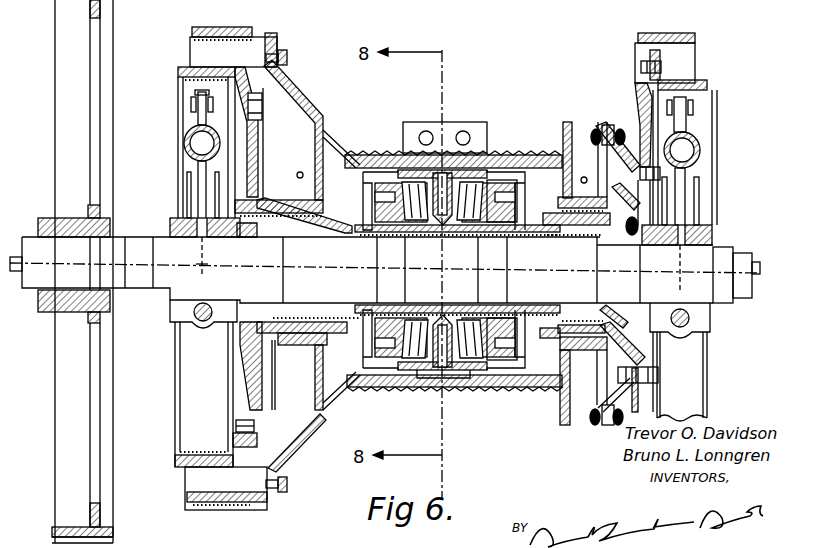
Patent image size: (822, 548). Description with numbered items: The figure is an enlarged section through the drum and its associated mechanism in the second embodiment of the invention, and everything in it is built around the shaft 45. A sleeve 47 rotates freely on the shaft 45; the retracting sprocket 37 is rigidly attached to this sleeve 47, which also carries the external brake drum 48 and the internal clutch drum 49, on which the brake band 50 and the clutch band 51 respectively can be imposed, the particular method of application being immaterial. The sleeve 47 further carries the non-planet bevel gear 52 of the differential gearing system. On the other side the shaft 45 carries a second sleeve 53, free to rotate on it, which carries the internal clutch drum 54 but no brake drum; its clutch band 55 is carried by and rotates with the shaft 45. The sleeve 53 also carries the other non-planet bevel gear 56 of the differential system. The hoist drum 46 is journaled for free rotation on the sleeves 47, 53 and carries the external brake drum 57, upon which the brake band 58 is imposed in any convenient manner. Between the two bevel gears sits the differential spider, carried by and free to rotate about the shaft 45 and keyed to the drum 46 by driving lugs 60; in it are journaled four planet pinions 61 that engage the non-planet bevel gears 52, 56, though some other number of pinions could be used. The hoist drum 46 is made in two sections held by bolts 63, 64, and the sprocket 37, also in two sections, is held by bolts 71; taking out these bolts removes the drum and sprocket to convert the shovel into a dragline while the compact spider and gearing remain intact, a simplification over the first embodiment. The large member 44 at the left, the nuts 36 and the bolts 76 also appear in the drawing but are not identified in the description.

The flywheel 44 is at (68, 108).
The shaft 45 is at (35, 248).
The brake band 58 is at (195, 30).
The external brake drum 57 is at (190, 37).
The internal clutch drum 54 is at (180, 70).
The clutch band 55 is at (190, 82).
The sleeve 53 is at (338, 340).
The bolt 76 is at (288, 58).
The hoist drum 46 is at (345, 150).
The bolts 63 is at (300, 172).
The bolts 64 is at (427, 131).
The non-planet bevel gear 56 is at (395, 176).
The planet pinions 61 is at (441, 170).
The non-planet bevel gear 52 is at (487, 166).
The driving lugs 60 is at (463, 380).
The sleeve 47 is at (546, 212).
The retracting sprocket 37 is at (606, 124).
The nut 36 is at (597, 123).
The bolts 71 is at (700, 172).
The brake band 50 is at (698, 37).
The external brake drum 48 is at (698, 48).
The internal clutch drum 49 is at (710, 80).
The clutch band 51 is at (710, 105).